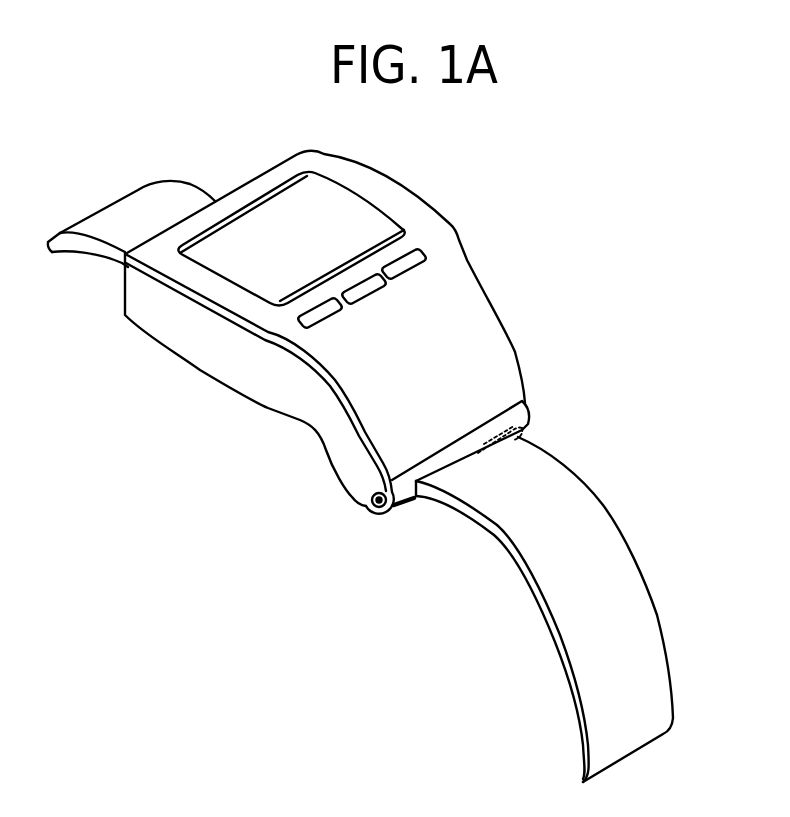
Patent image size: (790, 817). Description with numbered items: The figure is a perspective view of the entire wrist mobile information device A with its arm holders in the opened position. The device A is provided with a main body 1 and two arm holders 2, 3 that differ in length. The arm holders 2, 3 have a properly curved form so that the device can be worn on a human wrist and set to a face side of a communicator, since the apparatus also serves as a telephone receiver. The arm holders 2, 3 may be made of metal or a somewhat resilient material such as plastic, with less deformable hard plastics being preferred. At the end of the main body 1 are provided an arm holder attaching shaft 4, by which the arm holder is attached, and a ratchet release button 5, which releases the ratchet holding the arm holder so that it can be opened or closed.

The wrist mobile information device A is at (549, 207).
The main body 1 is at (392, 198).
The arm holder 2 is at (170, 196).
The arm holder 3 is at (597, 525).
The arm holder attaching shaft 4 is at (523, 432).
The ratchet release button 5 is at (376, 507).